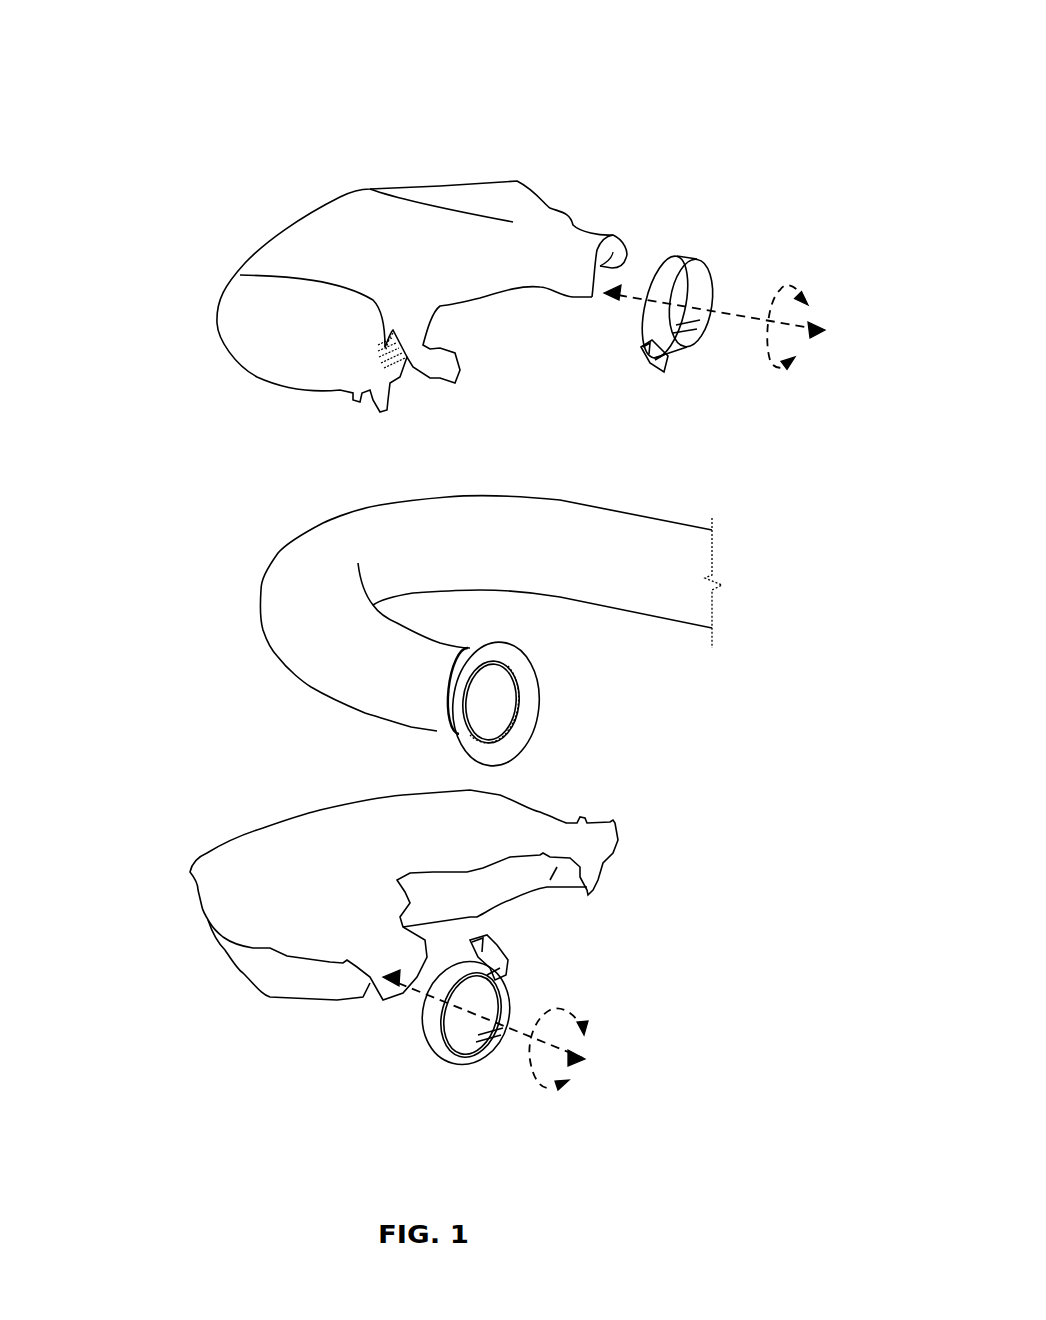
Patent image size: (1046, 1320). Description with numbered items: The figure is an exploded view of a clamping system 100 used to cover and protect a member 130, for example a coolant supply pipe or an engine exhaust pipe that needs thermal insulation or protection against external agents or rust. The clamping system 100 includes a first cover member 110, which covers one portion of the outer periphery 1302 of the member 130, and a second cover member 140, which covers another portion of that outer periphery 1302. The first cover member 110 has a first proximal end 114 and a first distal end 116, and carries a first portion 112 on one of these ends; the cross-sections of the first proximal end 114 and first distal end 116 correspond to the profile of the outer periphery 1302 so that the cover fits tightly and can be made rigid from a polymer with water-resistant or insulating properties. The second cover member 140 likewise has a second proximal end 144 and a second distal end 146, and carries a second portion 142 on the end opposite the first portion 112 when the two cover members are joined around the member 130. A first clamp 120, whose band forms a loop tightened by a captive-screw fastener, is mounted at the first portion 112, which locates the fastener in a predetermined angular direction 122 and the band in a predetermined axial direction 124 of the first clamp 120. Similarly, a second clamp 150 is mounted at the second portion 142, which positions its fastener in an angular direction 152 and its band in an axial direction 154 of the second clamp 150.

The clamping system 100 is at (194, 70).
The first cover member 110 is at (366, 245).
The first portion 112 is at (240, 275).
The first proximal end 114 is at (363, 370).
The first distal end 116 is at (572, 243).
The second clamp 150 is at (670, 280).
The angular direction 152 is at (783, 285).
The axial direction 154 is at (725, 317).
The member 130 is at (312, 627).
The outer periphery 1302 is at (447, 533).
The second cover member 140 is at (283, 955).
The second portion 142 is at (563, 863).
The second proximal end 144 is at (352, 978).
The second distal end 146 is at (620, 823).
The first clamp 120 is at (430, 1024).
The angular direction 122 is at (551, 1091).
The axial direction 124 is at (512, 1033).